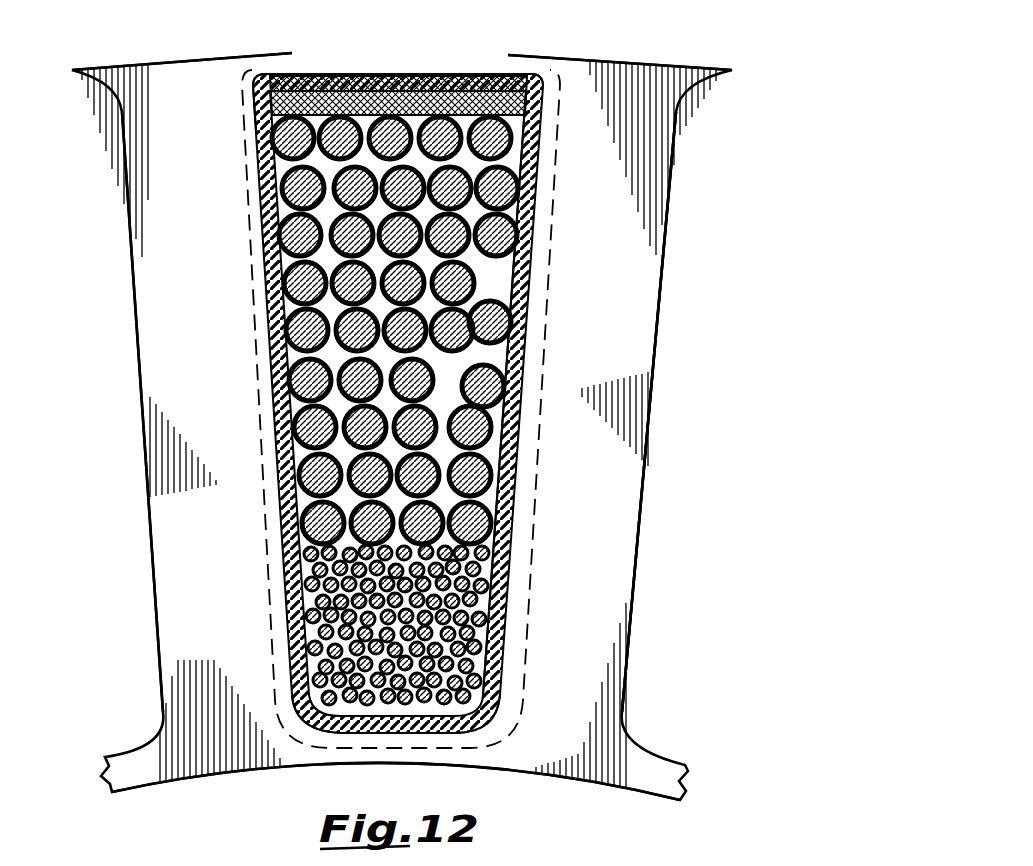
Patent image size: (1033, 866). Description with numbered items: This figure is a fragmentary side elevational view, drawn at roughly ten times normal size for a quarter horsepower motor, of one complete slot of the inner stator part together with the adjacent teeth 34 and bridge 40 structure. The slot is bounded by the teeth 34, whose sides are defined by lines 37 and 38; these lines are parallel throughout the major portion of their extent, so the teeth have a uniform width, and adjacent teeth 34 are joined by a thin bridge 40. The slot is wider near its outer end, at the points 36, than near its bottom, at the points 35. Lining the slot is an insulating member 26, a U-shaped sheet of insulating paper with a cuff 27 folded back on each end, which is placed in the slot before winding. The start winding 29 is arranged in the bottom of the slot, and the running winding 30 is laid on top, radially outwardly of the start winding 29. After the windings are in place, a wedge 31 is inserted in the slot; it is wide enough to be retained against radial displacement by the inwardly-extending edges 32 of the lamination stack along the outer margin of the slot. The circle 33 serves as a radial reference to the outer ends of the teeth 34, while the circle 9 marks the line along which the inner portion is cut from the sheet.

The circle 9 is at (252, 773).
The insulating member 26 is at (268, 365).
The cuff 27 is at (262, 437).
The start winding 29 is at (510, 575).
The running winding 30 is at (490, 303).
The wedge 31 is at (449, 73).
The inwardly-extending edge 32 is at (266, 72).
The circle 33 is at (200, 62).
The tooth 34 is at (150, 325).
The slot width point 35 is at (292, 670).
The slot width point 36 is at (250, 128).
The tooth side line 37 is at (517, 500).
The tooth side line 38 is at (637, 534).
The bridge 40 is at (410, 762).